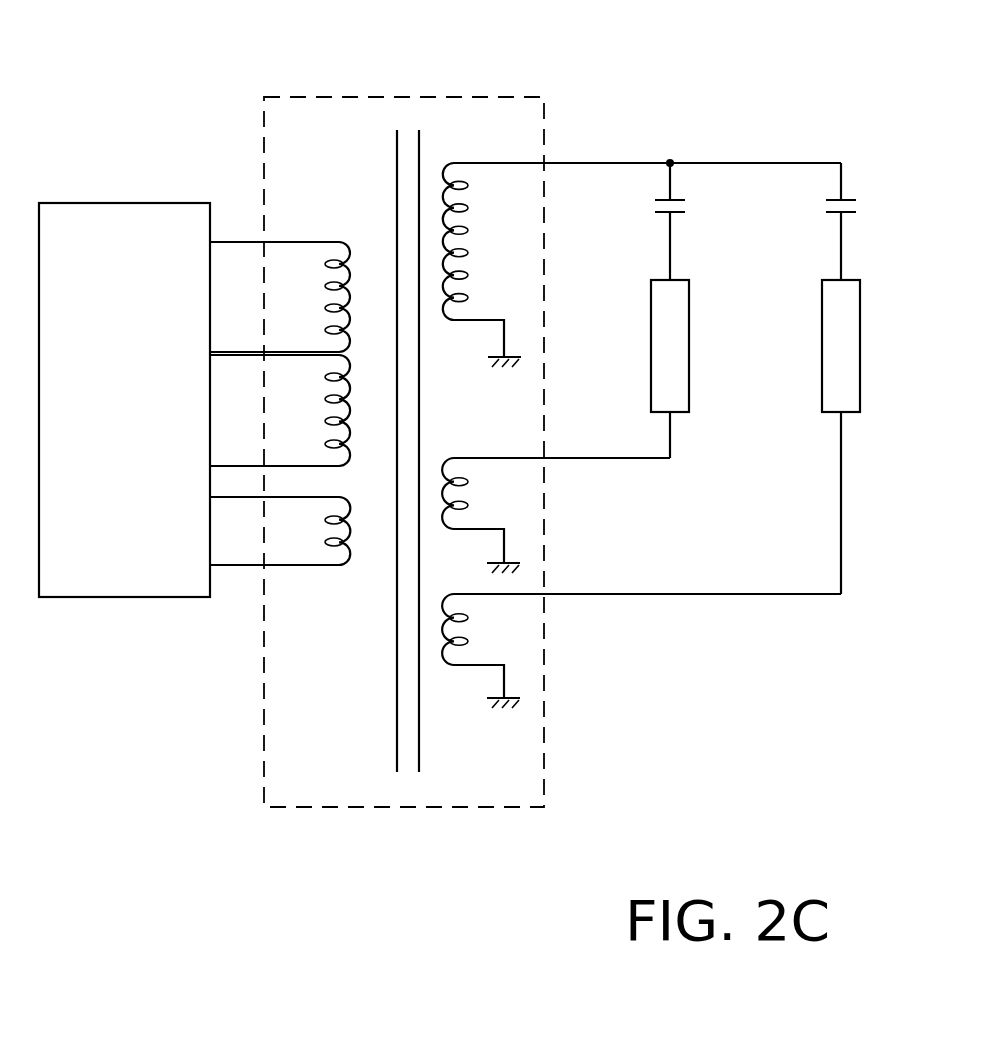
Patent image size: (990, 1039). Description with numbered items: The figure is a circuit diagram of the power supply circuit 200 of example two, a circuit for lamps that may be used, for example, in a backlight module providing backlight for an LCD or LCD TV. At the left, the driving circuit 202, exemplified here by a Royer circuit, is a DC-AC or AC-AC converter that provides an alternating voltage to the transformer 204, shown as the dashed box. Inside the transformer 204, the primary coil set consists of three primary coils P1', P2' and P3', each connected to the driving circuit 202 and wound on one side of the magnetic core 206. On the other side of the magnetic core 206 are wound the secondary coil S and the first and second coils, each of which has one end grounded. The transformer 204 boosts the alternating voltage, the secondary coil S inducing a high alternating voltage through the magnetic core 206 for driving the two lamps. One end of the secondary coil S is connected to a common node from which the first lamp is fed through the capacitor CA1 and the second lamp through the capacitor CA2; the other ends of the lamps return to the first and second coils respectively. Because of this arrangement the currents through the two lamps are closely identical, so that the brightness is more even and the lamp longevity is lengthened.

The power supply circuit 200 is at (953, 53).
The driving circuit 202 is at (122, 203).
The transformer 204 is at (420, 97).
The magnetic core 206 is at (397, 725).
The primary coil P1' is at (280, 297).
The primary coil P2' is at (280, 410).
The primary coil P3' is at (280, 531).
The secondary coil S is at (494, 265).
The capacitor CA1 is at (702, 221).
The capacitor CA2 is at (874, 221).